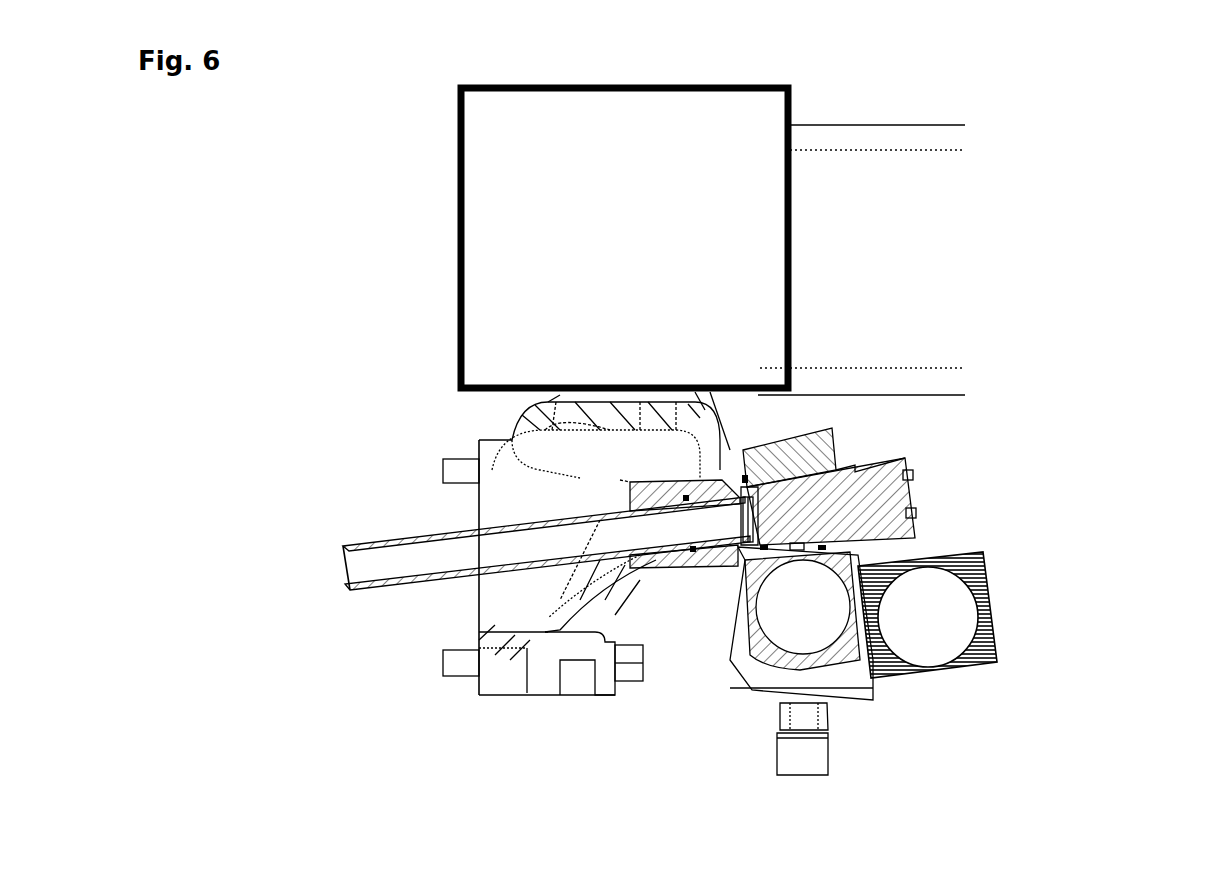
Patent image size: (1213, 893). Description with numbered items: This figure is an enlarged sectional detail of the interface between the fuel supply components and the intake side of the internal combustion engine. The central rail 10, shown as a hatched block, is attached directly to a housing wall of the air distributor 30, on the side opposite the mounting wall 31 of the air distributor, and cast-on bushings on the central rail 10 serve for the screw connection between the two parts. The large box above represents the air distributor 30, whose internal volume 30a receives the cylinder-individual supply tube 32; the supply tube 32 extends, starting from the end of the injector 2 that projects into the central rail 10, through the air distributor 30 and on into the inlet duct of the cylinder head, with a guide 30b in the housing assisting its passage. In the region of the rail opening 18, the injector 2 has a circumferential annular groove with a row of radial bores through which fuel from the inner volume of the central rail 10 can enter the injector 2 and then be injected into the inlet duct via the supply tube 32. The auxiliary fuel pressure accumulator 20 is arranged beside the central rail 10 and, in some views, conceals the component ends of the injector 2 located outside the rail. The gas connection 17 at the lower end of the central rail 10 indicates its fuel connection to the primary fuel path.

The air distributor 30 is at (378, 203).
The internal volume of the air distributor 30a is at (535, 498).
The guide 30b is at (663, 490).
The mounting wall of the air distributor 31 is at (475, 690).
The supply tube 32 is at (546, 543).
The central rail 10 is at (735, 452).
The injector 2 is at (940, 496).
The rail opening 18 is at (797, 548).
The auxiliary fuel pressure accumulator 20 is at (997, 608).
The gas connection 17 is at (810, 753).